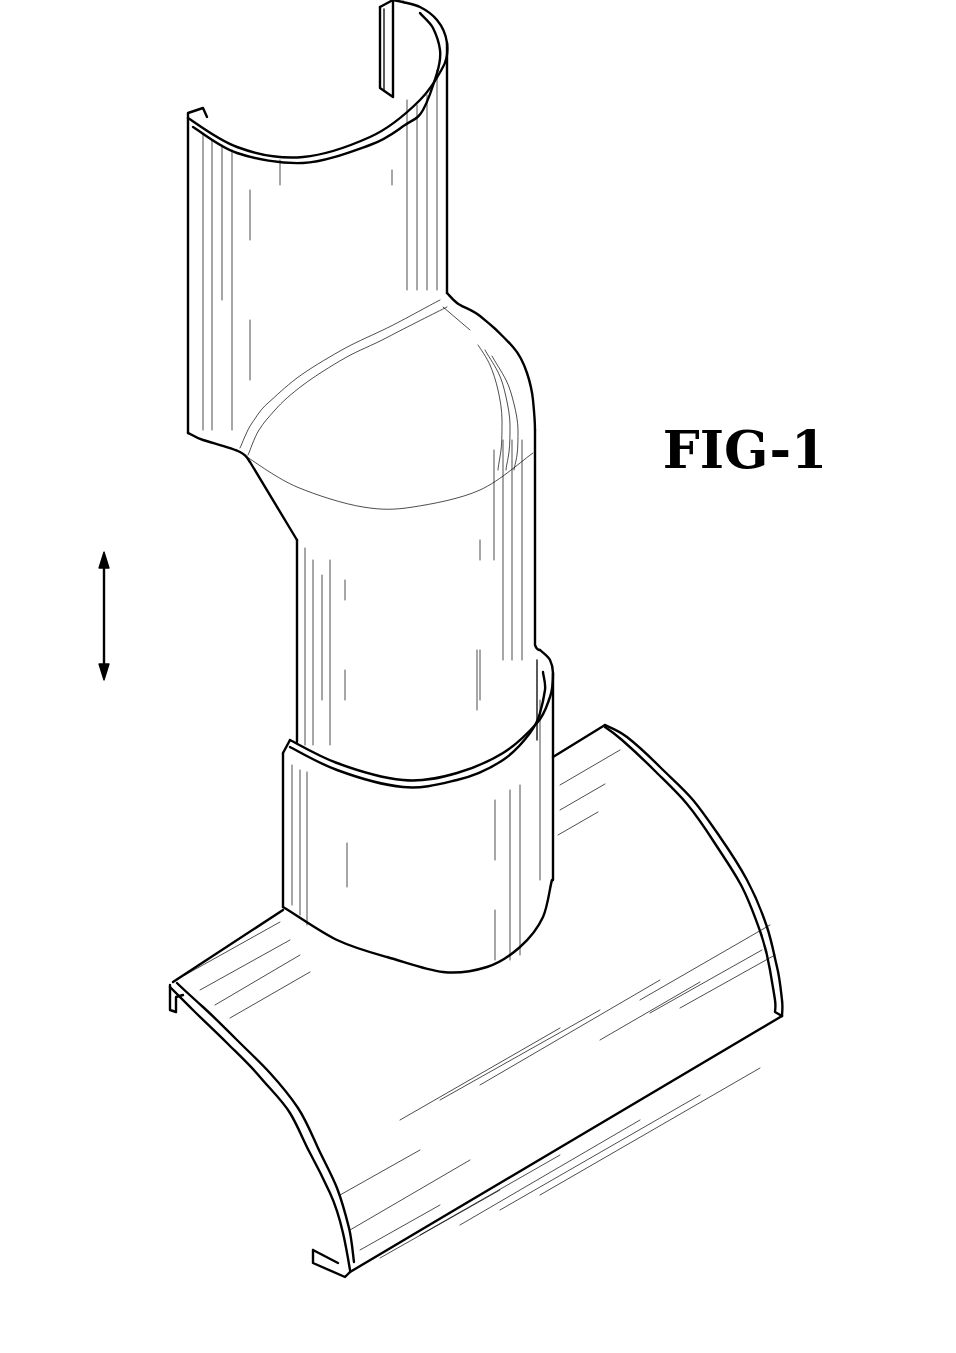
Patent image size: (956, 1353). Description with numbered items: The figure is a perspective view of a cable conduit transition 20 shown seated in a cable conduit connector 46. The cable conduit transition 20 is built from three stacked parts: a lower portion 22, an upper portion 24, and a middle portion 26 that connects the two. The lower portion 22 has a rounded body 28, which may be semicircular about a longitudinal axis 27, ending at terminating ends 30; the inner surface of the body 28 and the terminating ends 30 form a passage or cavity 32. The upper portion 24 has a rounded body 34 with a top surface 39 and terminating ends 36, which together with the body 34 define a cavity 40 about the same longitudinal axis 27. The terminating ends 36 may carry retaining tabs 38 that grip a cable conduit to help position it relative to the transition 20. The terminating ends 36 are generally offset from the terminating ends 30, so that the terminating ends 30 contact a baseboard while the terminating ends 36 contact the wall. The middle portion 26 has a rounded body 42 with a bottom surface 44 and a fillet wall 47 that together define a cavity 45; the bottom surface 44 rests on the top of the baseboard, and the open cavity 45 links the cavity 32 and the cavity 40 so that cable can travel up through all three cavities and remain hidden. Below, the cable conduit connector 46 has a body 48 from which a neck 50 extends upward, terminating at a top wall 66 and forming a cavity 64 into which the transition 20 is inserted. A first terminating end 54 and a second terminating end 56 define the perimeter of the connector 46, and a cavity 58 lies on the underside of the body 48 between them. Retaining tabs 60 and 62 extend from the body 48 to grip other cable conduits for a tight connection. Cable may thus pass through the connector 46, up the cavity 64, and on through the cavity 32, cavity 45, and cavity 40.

The cable conduit transition 20 is at (158, 296).
The lower portion 22 is at (548, 566).
The upper portion 24 is at (462, 163).
The middle portion 26 is at (540, 355).
The longitudinal axis 27 is at (104, 614).
The rounded body 28 is at (468, 623).
The terminating ends 30 is at (297, 603).
The cavity 32 is at (367, 648).
The rounded body 34 is at (390, 228).
The terminating ends 36 is at (393, 105).
The retaining tabs 38 is at (203, 113).
The top surface 39 is at (248, 137).
The cavity 40 is at (269, 130).
The body 42 is at (447, 357).
The bottom surface 44 is at (204, 447).
The cavity 45 is at (452, 405).
The cable conduit connector 46 is at (607, 1133).
The fillet wall 47 is at (273, 498).
The body 48 is at (672, 843).
The neck 50 is at (303, 823).
The first terminating end 54 is at (280, 1103).
The second terminating end 56 is at (740, 855).
The cavity 58 is at (247, 1082).
The retaining tab 60 is at (170, 1000).
The retaining tab 62 is at (322, 1257).
The cavity 64 is at (420, 757).
The top wall 66 is at (392, 765).